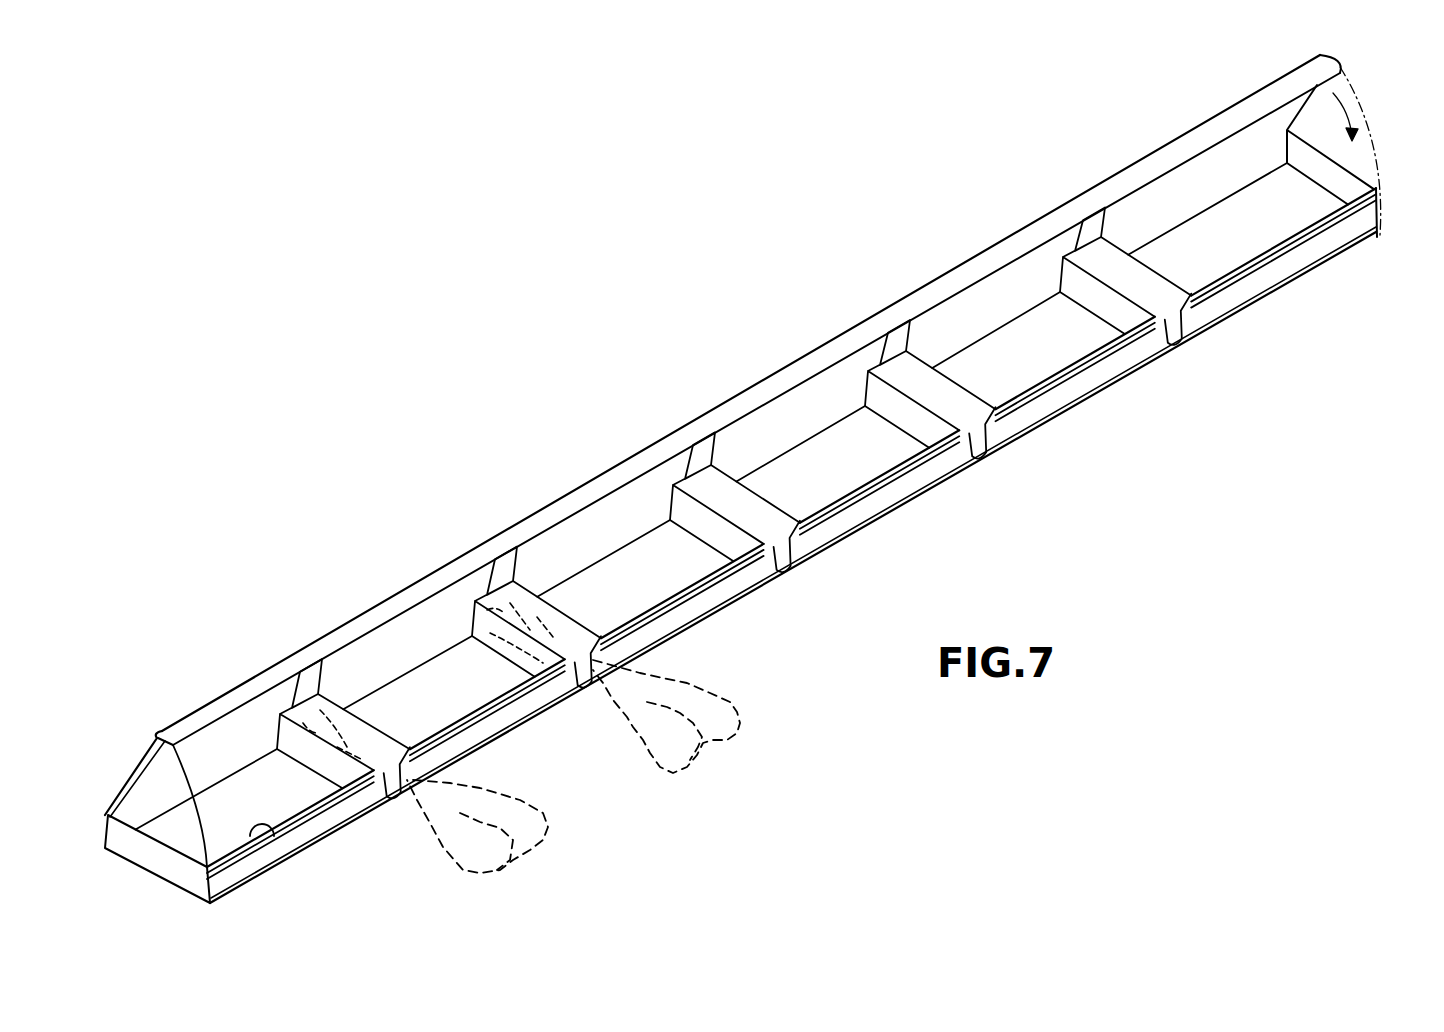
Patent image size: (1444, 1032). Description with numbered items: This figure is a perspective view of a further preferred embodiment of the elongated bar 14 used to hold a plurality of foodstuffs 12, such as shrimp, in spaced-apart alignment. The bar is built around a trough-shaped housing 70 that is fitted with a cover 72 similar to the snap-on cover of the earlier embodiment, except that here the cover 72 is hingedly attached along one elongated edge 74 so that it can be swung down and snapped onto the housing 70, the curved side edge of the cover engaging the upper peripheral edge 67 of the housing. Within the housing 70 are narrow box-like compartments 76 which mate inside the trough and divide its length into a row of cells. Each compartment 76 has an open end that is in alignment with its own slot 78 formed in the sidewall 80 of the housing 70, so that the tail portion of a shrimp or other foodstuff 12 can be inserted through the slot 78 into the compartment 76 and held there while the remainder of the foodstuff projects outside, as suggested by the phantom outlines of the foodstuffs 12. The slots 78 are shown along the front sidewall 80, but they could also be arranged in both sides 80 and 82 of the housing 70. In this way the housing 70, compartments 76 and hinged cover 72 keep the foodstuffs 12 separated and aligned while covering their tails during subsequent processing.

The foodstuffs 12 is at (737, 738).
The elongated bar 14 is at (831, 558).
The upper peripheral edge 67 is at (277, 822).
The trough-shaped housing 70 is at (1378, 190).
The cover 72 is at (1120, 172).
The elongated edge 74 is at (218, 753).
The box-like compartments 76 is at (1118, 311).
The slots 78 is at (1187, 323).
The sidewall 80 is at (878, 493).
The side 82 is at (415, 650).